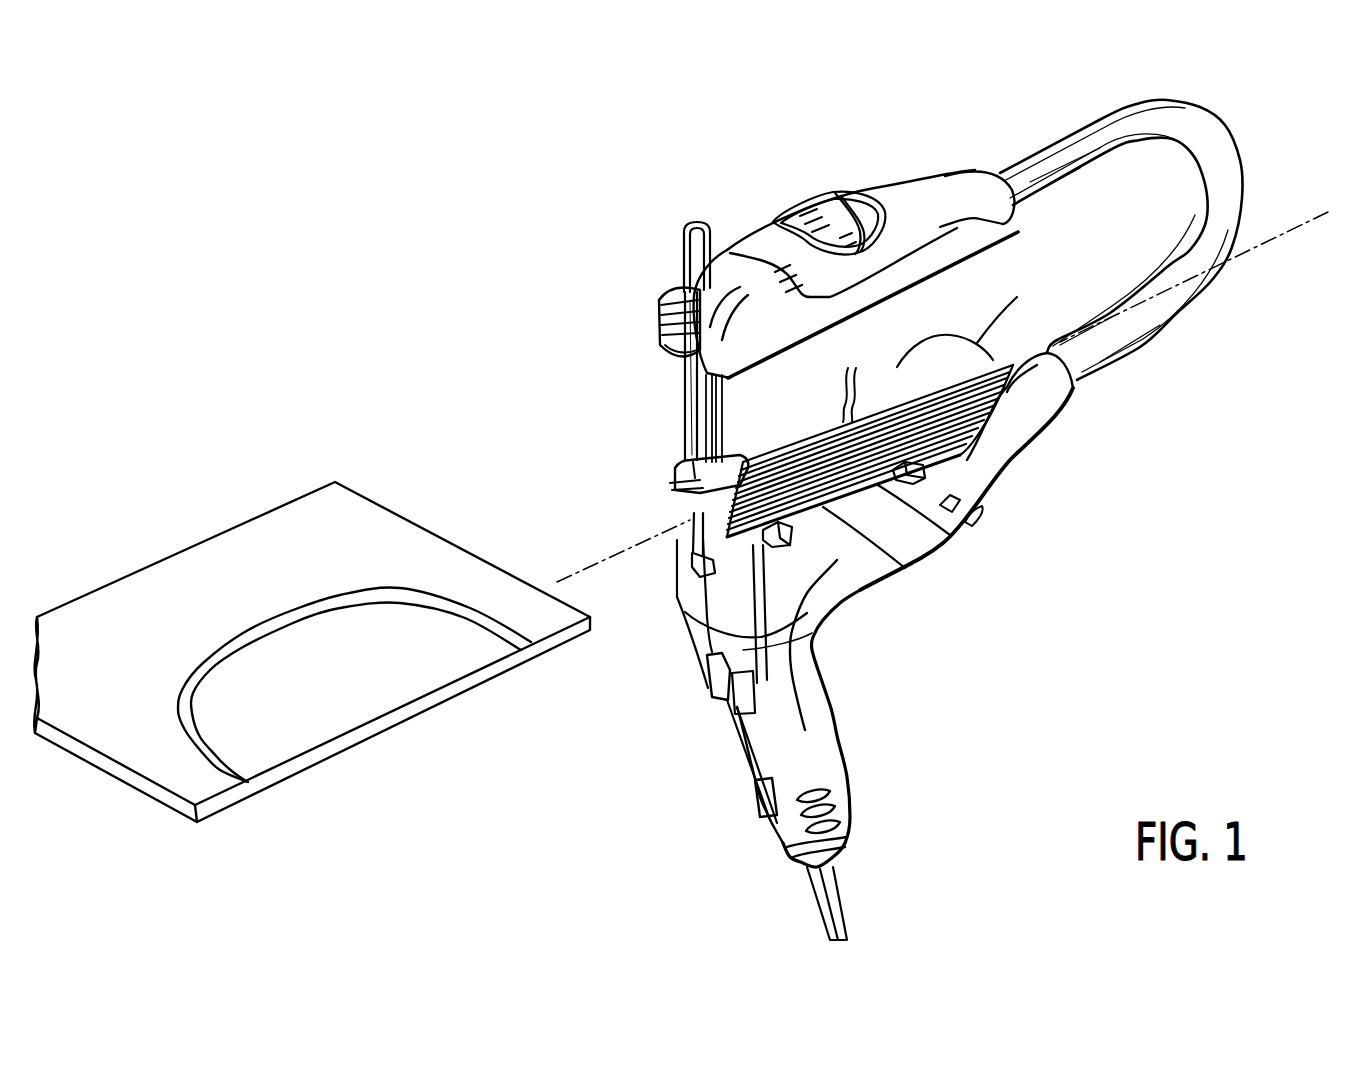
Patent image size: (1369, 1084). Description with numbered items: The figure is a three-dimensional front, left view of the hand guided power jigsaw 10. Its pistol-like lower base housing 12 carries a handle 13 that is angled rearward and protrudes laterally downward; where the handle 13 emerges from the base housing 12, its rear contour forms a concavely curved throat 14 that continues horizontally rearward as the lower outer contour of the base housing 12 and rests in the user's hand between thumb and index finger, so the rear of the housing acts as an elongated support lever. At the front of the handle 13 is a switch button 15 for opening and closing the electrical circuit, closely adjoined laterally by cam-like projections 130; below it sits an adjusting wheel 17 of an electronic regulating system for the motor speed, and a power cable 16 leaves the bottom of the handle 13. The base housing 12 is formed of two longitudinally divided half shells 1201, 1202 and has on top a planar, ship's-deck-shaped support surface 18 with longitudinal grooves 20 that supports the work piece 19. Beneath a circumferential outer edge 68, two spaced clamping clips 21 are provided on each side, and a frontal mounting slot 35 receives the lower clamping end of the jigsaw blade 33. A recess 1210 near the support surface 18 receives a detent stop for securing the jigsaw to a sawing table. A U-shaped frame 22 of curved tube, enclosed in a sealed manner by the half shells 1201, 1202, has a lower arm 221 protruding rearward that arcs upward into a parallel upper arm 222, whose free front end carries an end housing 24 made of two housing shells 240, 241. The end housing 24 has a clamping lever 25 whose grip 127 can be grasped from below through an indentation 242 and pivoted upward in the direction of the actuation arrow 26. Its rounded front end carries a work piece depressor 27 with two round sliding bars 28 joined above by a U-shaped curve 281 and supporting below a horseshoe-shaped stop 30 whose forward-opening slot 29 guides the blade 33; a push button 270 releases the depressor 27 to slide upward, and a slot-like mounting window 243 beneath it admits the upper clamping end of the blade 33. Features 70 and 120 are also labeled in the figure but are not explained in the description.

The power jigsaw 10 is at (522, 350).
The base housing 12 is at (967, 537).
The handle 13 is at (837, 767).
The throat 14 is at (813, 638).
The switch button 15 is at (727, 707).
The power cable 16 is at (843, 910).
The adjusting wheel 17 is at (757, 803).
The support surface 18 is at (795, 417).
The work piece 19 is at (235, 534).
The longitudinal grooves 20 is at (852, 380).
The clamping clips 21 is at (927, 467).
The U-shaped frame 22 is at (1245, 148).
The end housing 24 is at (945, 170).
The clamping lever 25 is at (819, 186).
The actuation arrow 26 is at (807, 185).
The work piece depressor 27 is at (665, 426).
The sliding bars 28 is at (705, 380).
The slot 29 is at (687, 463).
The stop 30 is at (652, 490).
The jigsaw blade 33 is at (722, 403).
The frontal mounting slot 35 is at (677, 597).
The circumferential outer edge 68 is at (903, 563).
The slot 70 is at (977, 557).
The axis 120 is at (1280, 233).
The grip 127 is at (850, 186).
The cam-like projections 130 is at (708, 687).
The lower arm 221 is at (1132, 337).
The upper arm 222 is at (1036, 165).
The housing shell 240 is at (973, 160).
The housing shell 241 is at (1013, 218).
The indentation 242 is at (898, 186).
The mounting window 243 is at (680, 342).
The push button 270 is at (672, 288).
The U-shaped curve 281 is at (683, 224).
The half shell 1201 is at (1022, 407).
The half shell 1202 is at (1003, 333).
The recess 1210 is at (978, 345).